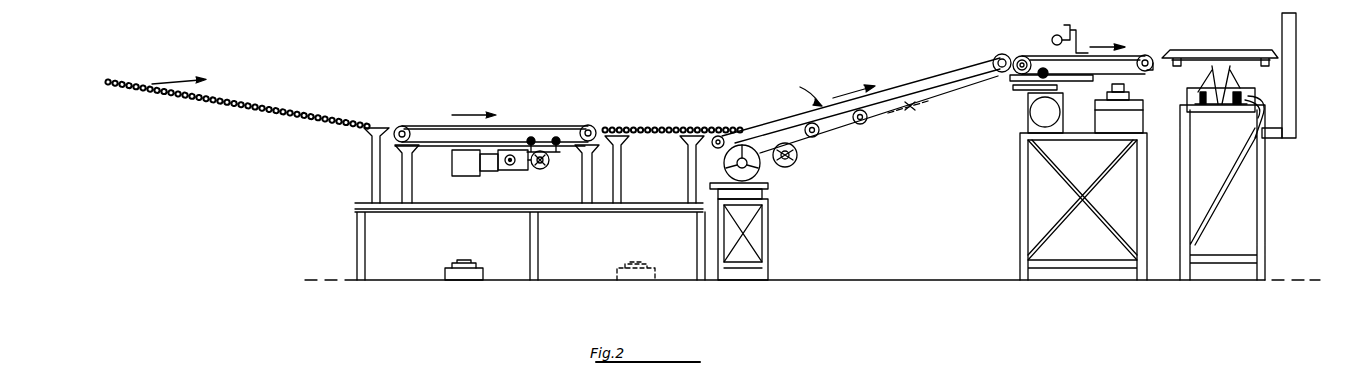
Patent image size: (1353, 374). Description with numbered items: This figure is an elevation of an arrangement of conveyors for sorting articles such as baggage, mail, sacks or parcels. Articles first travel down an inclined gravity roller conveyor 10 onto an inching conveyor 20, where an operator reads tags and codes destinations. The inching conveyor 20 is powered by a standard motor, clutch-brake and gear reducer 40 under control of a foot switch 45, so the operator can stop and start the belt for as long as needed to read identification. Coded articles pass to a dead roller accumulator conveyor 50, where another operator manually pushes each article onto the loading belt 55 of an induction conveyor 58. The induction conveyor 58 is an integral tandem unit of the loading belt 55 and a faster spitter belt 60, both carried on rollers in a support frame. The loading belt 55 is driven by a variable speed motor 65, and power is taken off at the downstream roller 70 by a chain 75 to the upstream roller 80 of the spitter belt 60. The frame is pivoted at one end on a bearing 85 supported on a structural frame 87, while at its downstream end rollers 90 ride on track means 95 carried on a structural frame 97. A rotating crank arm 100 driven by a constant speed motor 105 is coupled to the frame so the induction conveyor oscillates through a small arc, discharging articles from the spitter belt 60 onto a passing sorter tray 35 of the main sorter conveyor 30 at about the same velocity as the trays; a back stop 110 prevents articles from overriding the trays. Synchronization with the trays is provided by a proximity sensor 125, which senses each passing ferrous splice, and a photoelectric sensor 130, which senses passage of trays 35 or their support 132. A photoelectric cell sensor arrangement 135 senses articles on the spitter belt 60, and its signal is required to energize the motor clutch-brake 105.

The inclined gravity roller conveyor 10 is at (256, 98).
The inching conveyor 20 is at (530, 125).
The motor, clutch-brake and gear reducer 40 is at (505, 170).
The dead roller accumulator conveyor 50 is at (663, 126).
The foot switch 45 is at (468, 262).
The loading belt 55 is at (931, 70).
The proximity sensor 125 is at (919, 108).
The induction conveyor 58 is at (960, 40).
The variable speed motor 65 is at (762, 170).
The bearing 85 is at (745, 194).
The structural frame 87 is at (769, 236).
The downstream roller 70 is at (997, 55).
The chain 75 is at (1018, 56).
The spitter belt 60 is at (1086, 54).
The rollers 90 is at (1126, 75).
The photoelectric cell sensor arrangement 135 is at (1073, 25).
The upstream roller 80 is at (1012, 81).
The rotating crank arm 100 is at (1016, 90).
The constant speed motor 105 is at (1028, 120).
The structural frame 97 is at (1022, 224).
The track means 95 is at (1135, 97).
The sorter trays 35 is at (1222, 52).
The main sorter conveyor 30 is at (1250, 45).
The support 132 is at (1242, 88).
The photoelectric sensor 130 is at (1268, 98).
The back stop 110 is at (1296, 45).